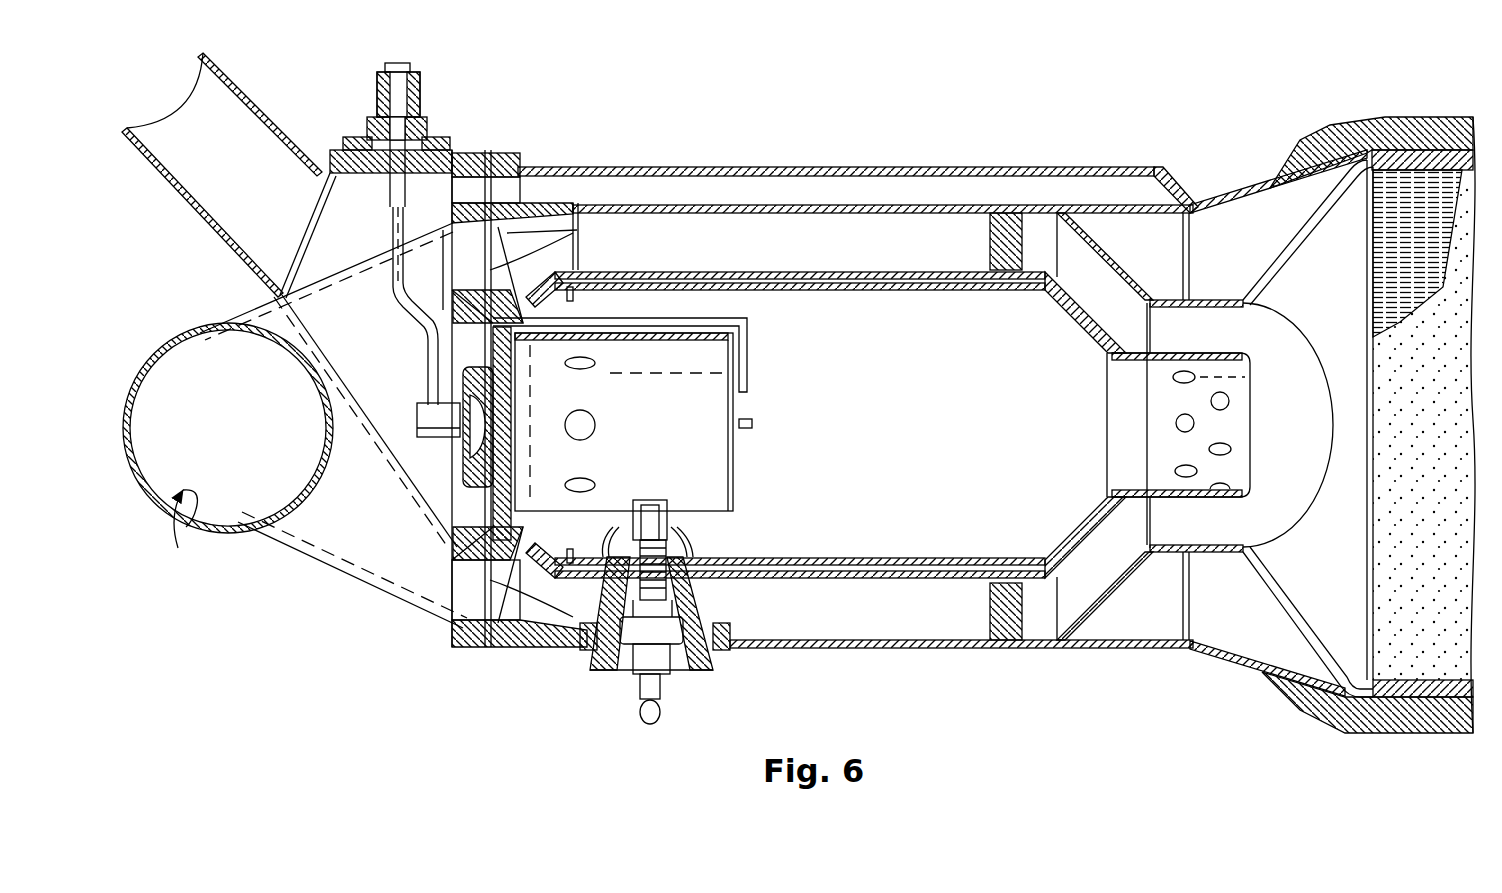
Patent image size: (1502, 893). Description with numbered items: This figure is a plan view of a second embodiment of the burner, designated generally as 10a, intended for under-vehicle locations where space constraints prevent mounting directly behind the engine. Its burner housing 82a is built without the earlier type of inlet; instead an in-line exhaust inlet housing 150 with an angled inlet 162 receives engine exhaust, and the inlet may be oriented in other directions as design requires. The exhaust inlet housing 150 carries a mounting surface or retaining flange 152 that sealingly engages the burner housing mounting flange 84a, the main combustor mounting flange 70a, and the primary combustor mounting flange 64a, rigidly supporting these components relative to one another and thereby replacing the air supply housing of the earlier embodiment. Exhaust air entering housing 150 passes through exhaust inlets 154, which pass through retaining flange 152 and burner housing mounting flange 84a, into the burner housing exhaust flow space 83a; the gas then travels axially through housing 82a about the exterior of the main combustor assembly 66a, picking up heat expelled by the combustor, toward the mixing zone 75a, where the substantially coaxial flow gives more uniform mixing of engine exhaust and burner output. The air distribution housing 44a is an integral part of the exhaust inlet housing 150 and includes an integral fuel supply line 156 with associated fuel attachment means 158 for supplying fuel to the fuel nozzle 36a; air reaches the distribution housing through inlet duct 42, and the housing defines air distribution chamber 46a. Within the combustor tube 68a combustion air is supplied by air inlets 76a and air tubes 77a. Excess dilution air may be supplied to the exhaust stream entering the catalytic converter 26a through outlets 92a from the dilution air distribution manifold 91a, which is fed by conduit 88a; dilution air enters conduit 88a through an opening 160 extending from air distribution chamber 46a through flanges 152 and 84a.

The burner 10a is at (968, 660).
The catalytic converter 26a is at (1383, 128).
The fuel nozzle 36a is at (453, 447).
The inlet duct 42 is at (258, 103).
The air distribution housing 44a is at (280, 293).
The air distribution chamber 46a is at (200, 337).
The primary combustor mounting flange 64a is at (430, 360).
The main combustor assembly 66a is at (849, 585).
The combustor tube 68a is at (893, 287).
The main combustor mounting flange 70a is at (520, 552).
The mixing zone 75a is at (1199, 525).
The air inlets 76a is at (457, 533).
The air tubes 77a is at (748, 423).
The burner housing 82a is at (905, 650).
The burner housing exhaust flow space 83a is at (837, 227).
The burner housing mounting flange 84a is at (508, 162).
The conduit 88a is at (617, 187).
The dilution air distribution manifold 91a is at (1165, 253).
The outlets 92a is at (1170, 307).
The exhaust inlet housing 150 is at (313, 577).
The retaining flange 152 is at (470, 620).
The exhaust inlets 154 is at (520, 280).
The fuel supply line 156 is at (390, 226).
The fuel attachment means 158 is at (433, 128).
The opening 160 is at (487, 153).
The angled inlet 162 is at (185, 534).